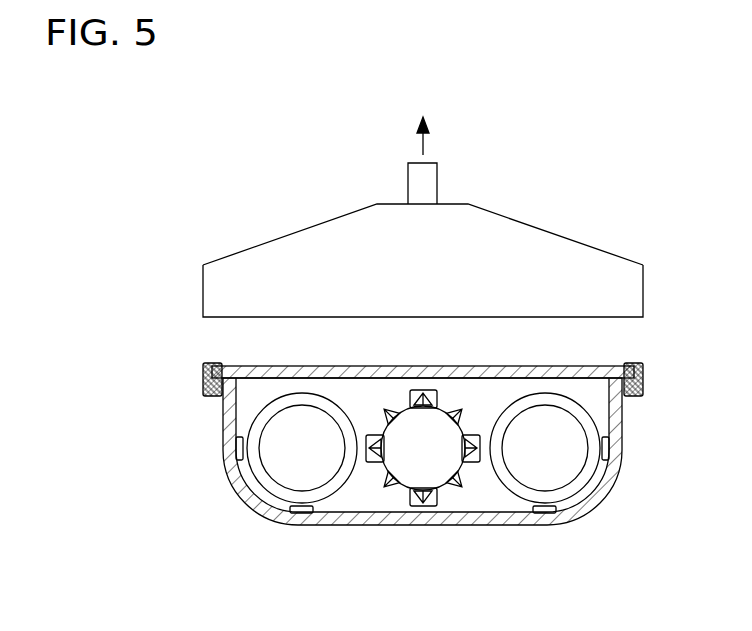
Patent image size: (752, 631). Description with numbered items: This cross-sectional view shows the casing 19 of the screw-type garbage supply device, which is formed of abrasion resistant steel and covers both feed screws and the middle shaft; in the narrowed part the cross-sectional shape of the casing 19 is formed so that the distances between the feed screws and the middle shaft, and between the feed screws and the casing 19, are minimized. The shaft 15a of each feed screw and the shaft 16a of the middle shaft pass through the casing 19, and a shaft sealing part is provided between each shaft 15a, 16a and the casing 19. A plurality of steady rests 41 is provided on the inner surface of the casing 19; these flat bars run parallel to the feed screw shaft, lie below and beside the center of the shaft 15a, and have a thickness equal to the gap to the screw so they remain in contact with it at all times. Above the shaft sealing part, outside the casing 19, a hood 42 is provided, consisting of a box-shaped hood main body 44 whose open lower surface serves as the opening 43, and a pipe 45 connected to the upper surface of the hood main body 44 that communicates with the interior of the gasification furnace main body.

The shaft of the feed screw 15a is at (283, 467).
The shaft of the middle shaft 16a is at (413, 473).
The casing 19 is at (498, 525).
The steady rest 41 is at (236, 447).
The hood 42 is at (453, 232).
The opening 43 is at (615, 317).
The hood main body 44 is at (593, 262).
The pipe 45 is at (433, 188).